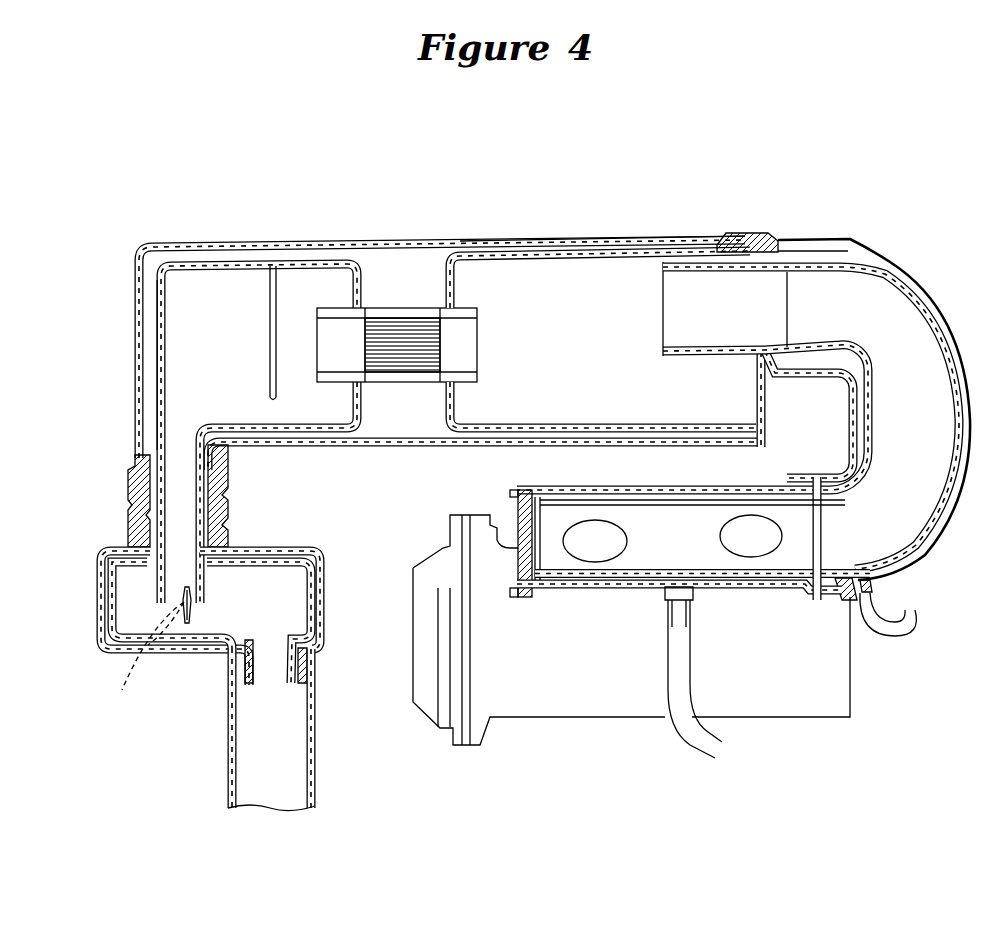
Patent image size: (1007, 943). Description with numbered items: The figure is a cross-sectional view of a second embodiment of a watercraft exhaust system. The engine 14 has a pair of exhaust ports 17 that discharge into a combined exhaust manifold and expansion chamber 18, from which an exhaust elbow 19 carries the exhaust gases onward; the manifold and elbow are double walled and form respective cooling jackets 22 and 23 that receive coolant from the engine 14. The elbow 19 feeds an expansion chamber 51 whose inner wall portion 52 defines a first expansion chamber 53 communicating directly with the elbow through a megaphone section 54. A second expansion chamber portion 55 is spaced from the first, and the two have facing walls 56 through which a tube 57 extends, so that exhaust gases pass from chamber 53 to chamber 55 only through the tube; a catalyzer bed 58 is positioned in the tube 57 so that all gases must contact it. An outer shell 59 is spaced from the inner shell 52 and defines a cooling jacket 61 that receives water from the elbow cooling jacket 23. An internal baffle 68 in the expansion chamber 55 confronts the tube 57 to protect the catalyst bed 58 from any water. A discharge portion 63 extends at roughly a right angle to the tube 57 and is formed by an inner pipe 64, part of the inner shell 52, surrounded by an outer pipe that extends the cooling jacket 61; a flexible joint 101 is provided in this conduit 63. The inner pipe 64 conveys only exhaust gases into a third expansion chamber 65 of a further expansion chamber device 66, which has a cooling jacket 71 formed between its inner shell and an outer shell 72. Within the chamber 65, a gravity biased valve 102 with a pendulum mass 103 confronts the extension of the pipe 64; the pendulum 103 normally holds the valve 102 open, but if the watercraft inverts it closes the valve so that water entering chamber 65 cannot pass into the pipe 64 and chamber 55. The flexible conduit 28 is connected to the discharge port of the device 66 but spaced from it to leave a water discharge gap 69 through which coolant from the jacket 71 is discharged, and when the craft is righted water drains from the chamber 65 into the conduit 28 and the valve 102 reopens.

The engine 14 is at (808, 706).
The exhaust ports 17 is at (745, 545).
The exhaust manifold 18 is at (740, 589).
The exhaust elbow 19 is at (877, 250).
The cooling jacket 22 is at (540, 598).
The cooling jacket 23 is at (972, 382).
The flexible conduit 28 is at (229, 756).
The expansion chamber 51 is at (443, 240).
The inner wall portion 52 is at (648, 280).
The first expansion chamber 53 is at (663, 275).
The megaphone section 54 is at (708, 272).
The second expansion chamber portion 55 is at (180, 297).
The facing walls 56 is at (443, 287).
The tube 57 is at (473, 308).
The catalyzer bed 58 is at (430, 342).
The outer shell 59 is at (527, 242).
The cooling jacket 61 is at (230, 256).
The discharge portion 63 is at (229, 514).
The inner pipe 64 is at (153, 412).
The third expansion chamber 65 is at (280, 623).
The expansion chamber device 66 is at (326, 583).
The internal baffle 68 is at (270, 322).
The water discharge gap 69 is at (297, 687).
The cooling jacket 71 is at (100, 602).
The outer shell 72 is at (100, 556).
The flexible joint 101 is at (128, 488).
The gravity biased valve 102 is at (192, 618).
The pendulum mass 103 is at (128, 655).